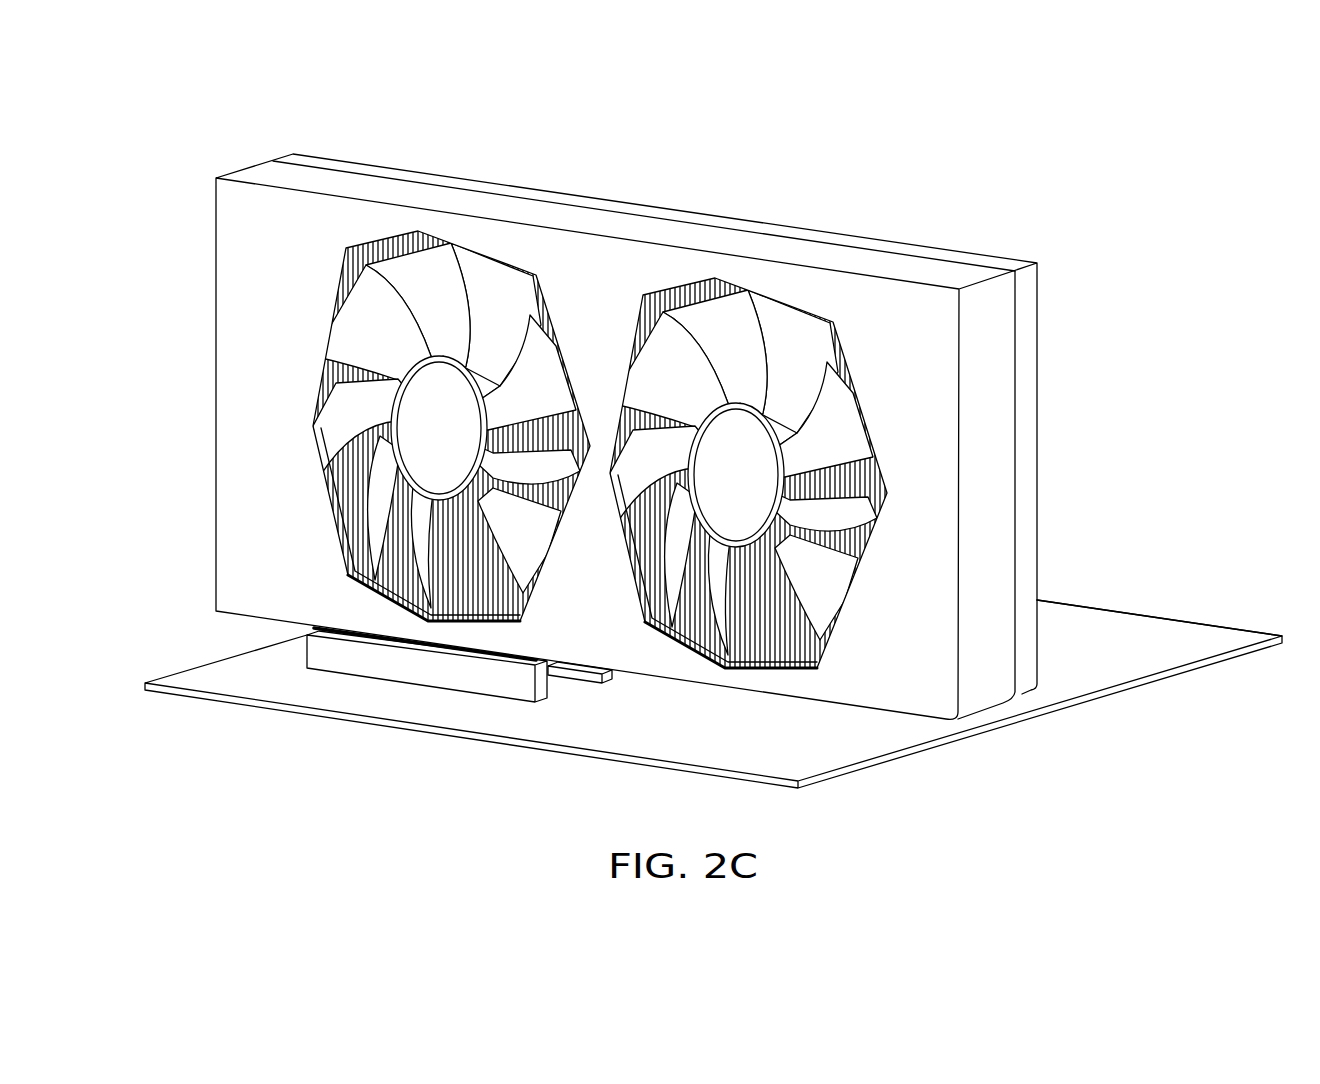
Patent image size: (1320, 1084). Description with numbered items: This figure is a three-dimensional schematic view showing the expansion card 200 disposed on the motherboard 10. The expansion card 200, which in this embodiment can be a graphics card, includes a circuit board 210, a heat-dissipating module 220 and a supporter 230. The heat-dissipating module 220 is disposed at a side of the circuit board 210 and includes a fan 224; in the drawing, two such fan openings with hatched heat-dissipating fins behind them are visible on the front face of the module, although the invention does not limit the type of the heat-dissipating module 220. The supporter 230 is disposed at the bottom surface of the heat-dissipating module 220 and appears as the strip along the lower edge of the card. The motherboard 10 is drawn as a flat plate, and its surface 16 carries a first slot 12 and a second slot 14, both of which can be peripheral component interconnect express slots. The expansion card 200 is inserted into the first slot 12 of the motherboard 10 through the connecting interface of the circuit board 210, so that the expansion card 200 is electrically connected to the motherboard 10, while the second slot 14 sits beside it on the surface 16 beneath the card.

The expansion card 200 is at (601, 439).
The circuit board 210 is at (1022, 314).
The heat-dissipating module 220 is at (947, 262).
The fan 224 is at (422, 442).
The supporter 230 is at (435, 643).
The motherboard 10 is at (1162, 677).
The surface of the motherboard 16 is at (1165, 637).
The second slot 14 is at (365, 667).
The first slot 12 is at (593, 670).